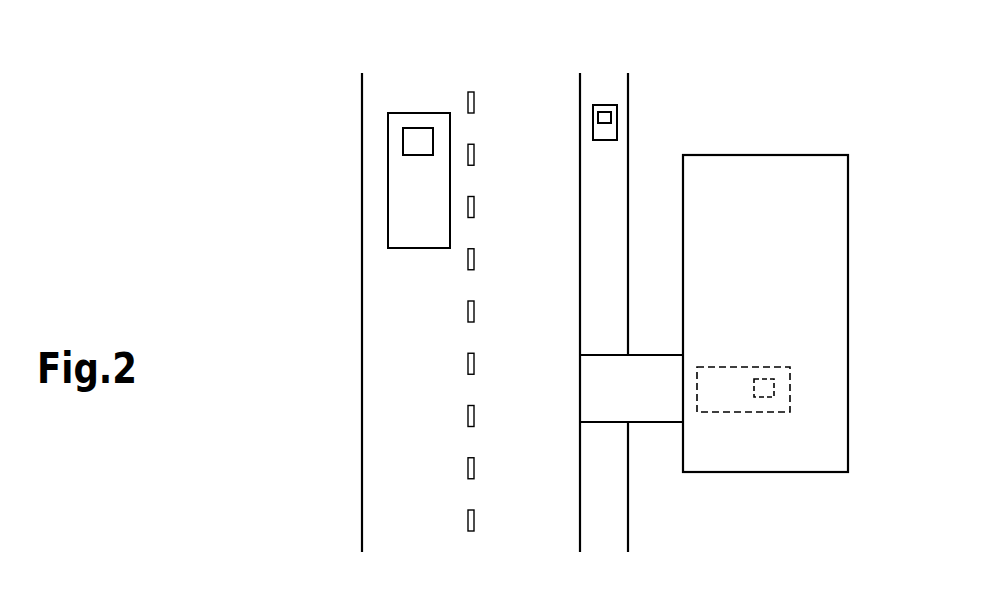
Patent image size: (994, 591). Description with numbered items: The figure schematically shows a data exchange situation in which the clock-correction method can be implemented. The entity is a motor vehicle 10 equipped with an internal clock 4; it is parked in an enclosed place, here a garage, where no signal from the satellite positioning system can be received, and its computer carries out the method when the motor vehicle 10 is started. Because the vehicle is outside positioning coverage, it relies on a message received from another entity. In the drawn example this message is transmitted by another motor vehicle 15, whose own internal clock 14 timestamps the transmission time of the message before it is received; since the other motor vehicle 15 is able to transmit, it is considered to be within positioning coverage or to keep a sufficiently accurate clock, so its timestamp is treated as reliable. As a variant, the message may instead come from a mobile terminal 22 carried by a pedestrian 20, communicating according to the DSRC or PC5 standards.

The internal clock 4 is at (765, 398).
The motor vehicle 10 is at (728, 357).
The internal clock 14 is at (410, 128).
The other motor vehicle 15 is at (380, 199).
The pedestrian 20 is at (626, 130).
The mobile terminal 22 is at (605, 112).